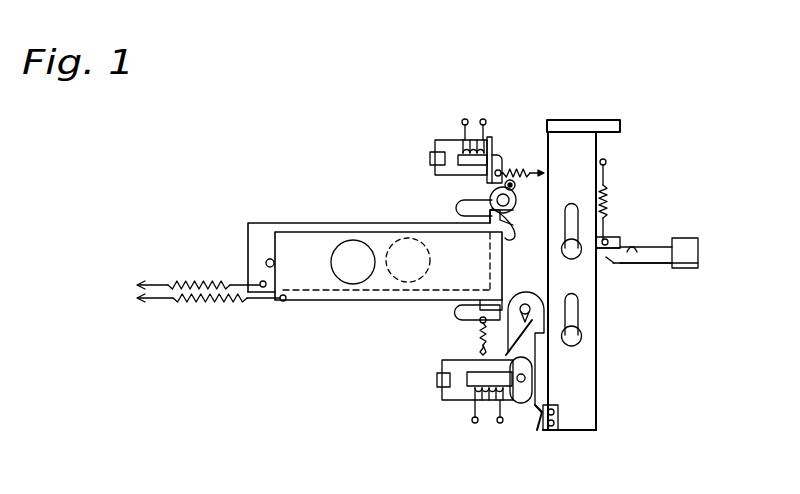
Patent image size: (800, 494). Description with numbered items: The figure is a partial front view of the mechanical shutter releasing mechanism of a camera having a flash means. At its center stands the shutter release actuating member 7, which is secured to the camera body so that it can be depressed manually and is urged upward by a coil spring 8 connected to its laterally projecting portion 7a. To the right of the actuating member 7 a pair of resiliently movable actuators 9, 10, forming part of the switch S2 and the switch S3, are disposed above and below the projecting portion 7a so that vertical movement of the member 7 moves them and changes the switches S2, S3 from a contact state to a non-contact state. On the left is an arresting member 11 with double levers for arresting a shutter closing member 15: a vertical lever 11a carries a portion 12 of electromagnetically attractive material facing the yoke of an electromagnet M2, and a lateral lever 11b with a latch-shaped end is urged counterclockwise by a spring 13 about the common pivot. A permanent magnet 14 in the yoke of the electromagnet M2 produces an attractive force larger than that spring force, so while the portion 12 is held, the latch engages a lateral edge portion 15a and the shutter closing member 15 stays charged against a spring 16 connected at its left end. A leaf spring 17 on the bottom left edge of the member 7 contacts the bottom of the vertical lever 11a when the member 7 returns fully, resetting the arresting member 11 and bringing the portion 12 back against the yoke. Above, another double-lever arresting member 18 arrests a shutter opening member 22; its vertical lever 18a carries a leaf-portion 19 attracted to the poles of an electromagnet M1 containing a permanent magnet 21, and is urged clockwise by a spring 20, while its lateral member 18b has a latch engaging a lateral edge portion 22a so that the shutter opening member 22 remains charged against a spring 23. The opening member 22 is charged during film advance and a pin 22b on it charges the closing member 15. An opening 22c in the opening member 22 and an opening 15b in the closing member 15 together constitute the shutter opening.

The shutter release actuating member 7 is at (565, 137).
The laterally projecting portion 7a is at (607, 250).
The coil spring 8 is at (608, 185).
The resiliently movable actuator 9 is at (625, 245).
The resiliently movable actuator 10 is at (640, 265).
The arresting member 11 is at (470, 403).
The vertical lever 11a is at (530, 362).
The lateral lever 11b is at (524, 302).
The portion of electromagnetically attractive material 12 is at (515, 402).
The spring 13 is at (462, 325).
The permanent magnet 14 is at (437, 382).
The shutter closing member 15 is at (293, 243).
The lateral edge portion 15a is at (487, 297).
The opening 15b is at (338, 280).
The spring 16 is at (192, 302).
The leaf spring 17 is at (530, 425).
The arresting member 18 is at (488, 194).
The vertical lever 18a is at (510, 180).
The lateral member 18b is at (460, 208).
The leaf-portion 19 is at (497, 152).
The spring 20 is at (523, 180).
The permanent magnet 21 is at (430, 158).
The shutter opening member 22 is at (268, 232).
The lateral edge portion 22a is at (497, 227).
The pin 22b is at (266, 262).
The opening 22c is at (393, 278).
The spring 23 is at (192, 284).
The electromagnet M1 is at (452, 148).
The electromagnet M2 is at (450, 400).
The switch S2 is at (670, 240).
The switch S3 is at (678, 268).